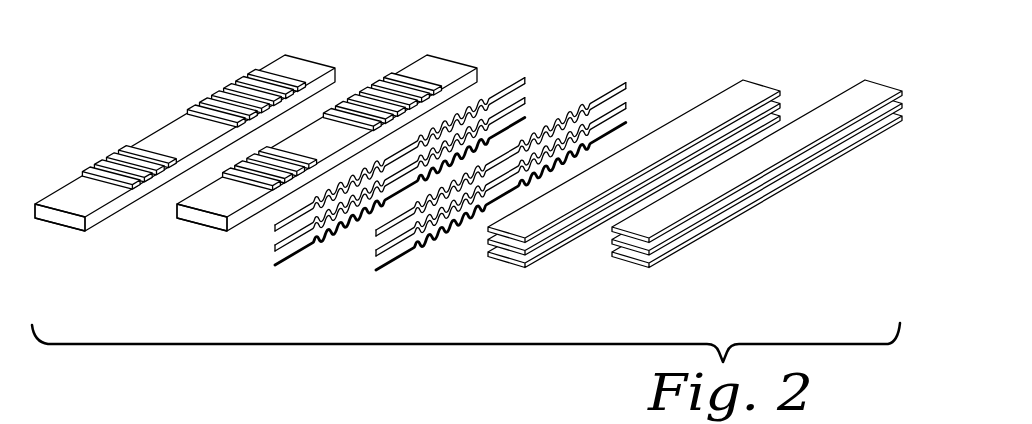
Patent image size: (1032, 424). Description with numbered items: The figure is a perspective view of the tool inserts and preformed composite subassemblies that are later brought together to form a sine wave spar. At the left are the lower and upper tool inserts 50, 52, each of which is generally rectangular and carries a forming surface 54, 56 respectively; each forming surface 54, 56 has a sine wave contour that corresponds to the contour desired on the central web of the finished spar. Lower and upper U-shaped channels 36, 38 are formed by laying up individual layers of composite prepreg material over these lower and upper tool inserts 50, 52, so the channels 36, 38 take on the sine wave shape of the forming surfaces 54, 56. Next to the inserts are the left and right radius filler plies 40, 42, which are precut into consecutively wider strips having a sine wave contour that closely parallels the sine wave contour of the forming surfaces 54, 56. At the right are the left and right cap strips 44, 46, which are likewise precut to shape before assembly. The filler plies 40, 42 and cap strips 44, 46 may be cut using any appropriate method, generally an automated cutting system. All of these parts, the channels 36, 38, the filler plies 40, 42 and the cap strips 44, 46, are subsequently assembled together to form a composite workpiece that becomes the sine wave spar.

The lower U-shaped channel 36 is at (82, 200).
The upper U-shaped channel 38 is at (437, 63).
The left radius filler ply 40 is at (512, 78).
The right radius filler ply 42 is at (620, 78).
The left cap strip 44 is at (762, 80).
The right cap strip 46 is at (880, 80).
The lower tool insert 50 is at (55, 226).
The upper tool insert 52 is at (202, 226).
The forming surface 54 is at (108, 157).
The forming surface 56 is at (360, 95).